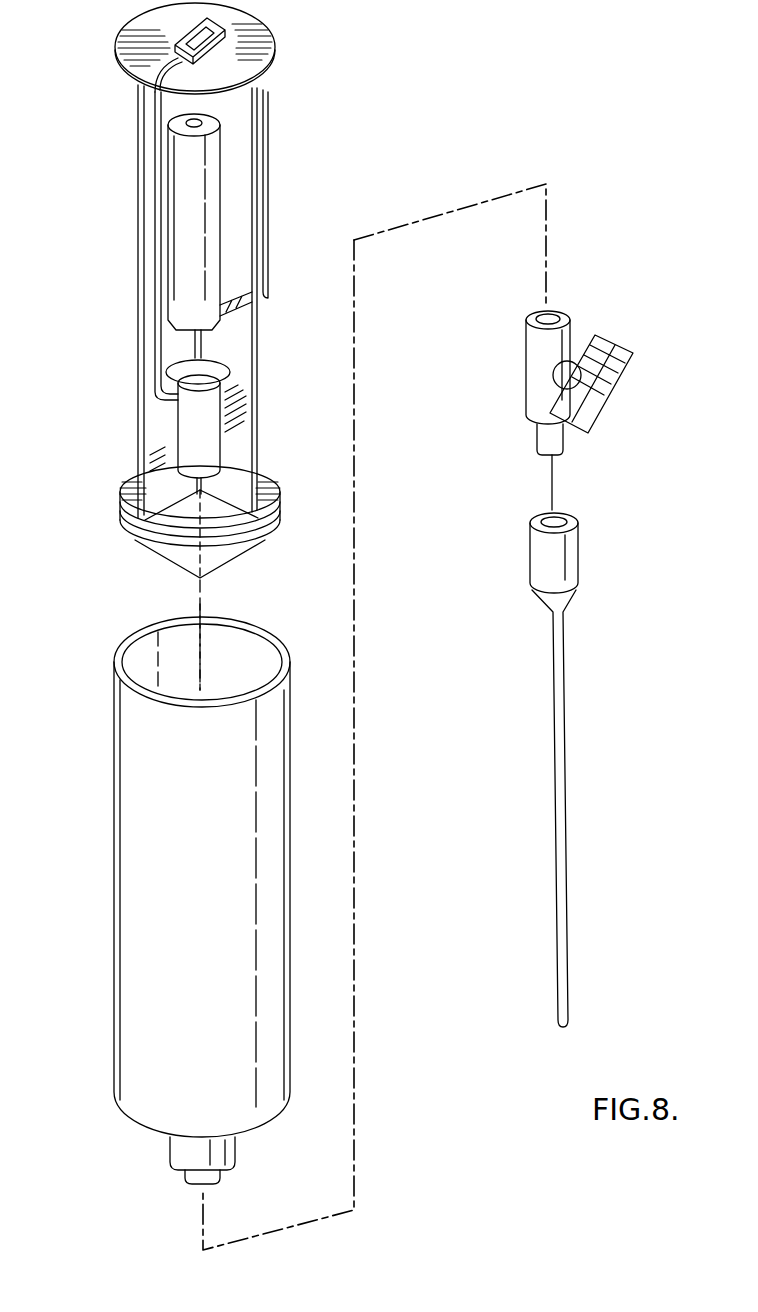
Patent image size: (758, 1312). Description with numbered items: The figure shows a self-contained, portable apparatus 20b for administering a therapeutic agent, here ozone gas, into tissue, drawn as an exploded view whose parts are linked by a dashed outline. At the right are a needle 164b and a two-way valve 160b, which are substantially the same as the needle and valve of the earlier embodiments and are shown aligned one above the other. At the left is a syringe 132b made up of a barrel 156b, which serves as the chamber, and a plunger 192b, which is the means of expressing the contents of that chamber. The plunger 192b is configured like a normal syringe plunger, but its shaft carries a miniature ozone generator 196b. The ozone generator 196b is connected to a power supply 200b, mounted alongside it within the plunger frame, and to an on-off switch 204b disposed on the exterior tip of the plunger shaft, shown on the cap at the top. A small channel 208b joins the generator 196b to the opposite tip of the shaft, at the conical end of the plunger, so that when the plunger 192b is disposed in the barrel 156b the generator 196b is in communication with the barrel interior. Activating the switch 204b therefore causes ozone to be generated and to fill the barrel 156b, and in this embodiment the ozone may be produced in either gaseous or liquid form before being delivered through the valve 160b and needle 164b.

The apparatus for administering a therapeutic agent into tissue 20b is at (538, 160).
The syringe 132b is at (98, 498).
The barrel 156b is at (258, 778).
The two-way valve 160b is at (608, 354).
The needle 164b is at (572, 742).
The plunger 192b is at (118, 291).
The miniature ozone generator 196b is at (190, 439).
The power supply 200b is at (184, 215).
The on-off switch 204b is at (166, 30).
The small channel 208b is at (188, 508).